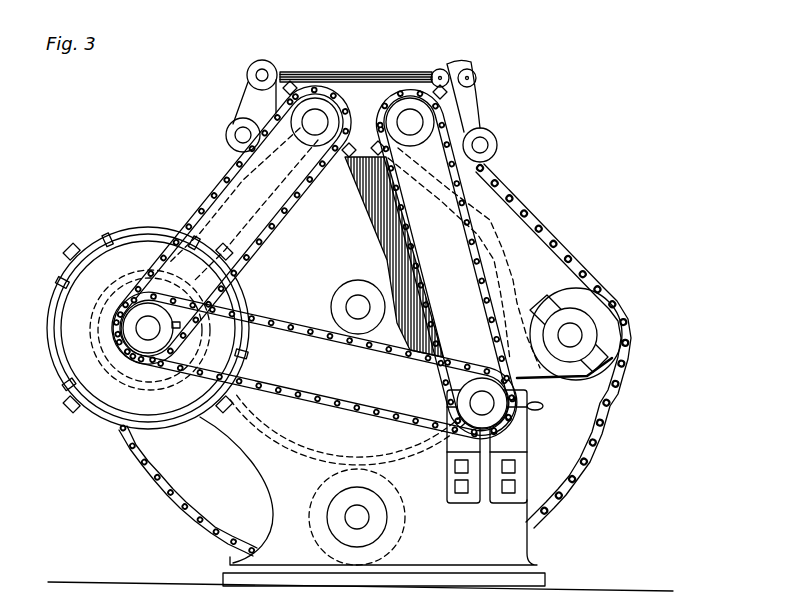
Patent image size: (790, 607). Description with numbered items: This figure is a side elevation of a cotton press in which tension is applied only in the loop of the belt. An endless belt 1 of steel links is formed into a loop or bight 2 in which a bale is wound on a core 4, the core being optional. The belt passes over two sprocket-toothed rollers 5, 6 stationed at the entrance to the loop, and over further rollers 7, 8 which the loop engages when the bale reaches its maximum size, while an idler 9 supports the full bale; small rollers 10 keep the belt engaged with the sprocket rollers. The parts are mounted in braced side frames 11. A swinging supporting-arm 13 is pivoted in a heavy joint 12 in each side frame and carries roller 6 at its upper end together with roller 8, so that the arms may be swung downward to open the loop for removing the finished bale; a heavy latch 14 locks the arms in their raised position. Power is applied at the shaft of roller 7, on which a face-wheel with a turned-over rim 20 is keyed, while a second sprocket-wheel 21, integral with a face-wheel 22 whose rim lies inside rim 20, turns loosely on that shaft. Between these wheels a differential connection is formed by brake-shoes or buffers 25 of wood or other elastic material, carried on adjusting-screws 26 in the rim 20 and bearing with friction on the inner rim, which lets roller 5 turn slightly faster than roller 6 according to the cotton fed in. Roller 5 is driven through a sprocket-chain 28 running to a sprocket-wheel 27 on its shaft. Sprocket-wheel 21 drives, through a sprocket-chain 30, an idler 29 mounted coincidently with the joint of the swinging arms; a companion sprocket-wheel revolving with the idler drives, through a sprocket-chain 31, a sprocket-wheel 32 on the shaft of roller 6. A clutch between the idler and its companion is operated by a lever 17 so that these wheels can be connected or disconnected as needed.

The endless belt 1 is at (572, 476).
The loop or bight 2 is at (405, 453).
The core 4 is at (358, 306).
The roller 5 is at (317, 110).
The roller 6 is at (409, 107).
The roller 7 is at (128, 372).
The roller 8 is at (588, 303).
The idler 9 is at (404, 520).
The small rollers 10 is at (228, 135).
The side frames 11 is at (270, 258).
The heavy joint 12 is at (523, 404).
The swinging supporting-arm 13 is at (427, 266).
The heavy latch 14 is at (355, 78).
The lever 17 is at (546, 408).
The turned-over rim 20 is at (147, 231).
The sprocket-wheel 21 is at (118, 313).
The face-wheel 22 is at (150, 335).
The brake-shoes or buffers 25 is at (78, 268).
The adjusting-screws 26 is at (70, 247).
The sprocket-wheel 27 is at (244, 204).
The sprocket-chain 28 is at (282, 217).
The idler 29 is at (492, 428).
The sprocket-chain 30 is at (293, 390).
The sprocket-chain 31 is at (410, 222).
The sprocket-wheel 32 is at (464, 258).